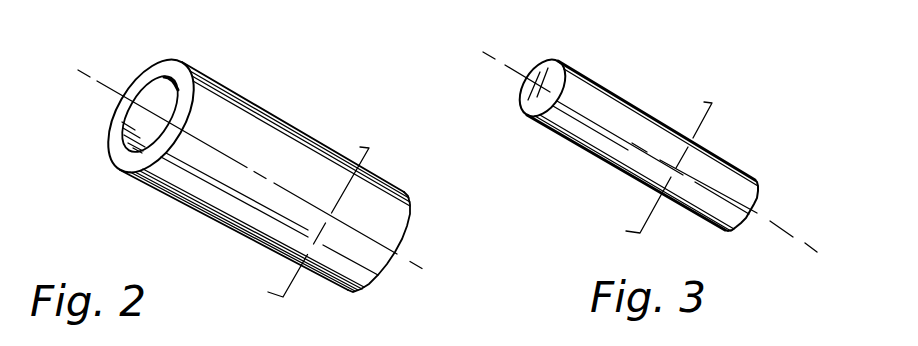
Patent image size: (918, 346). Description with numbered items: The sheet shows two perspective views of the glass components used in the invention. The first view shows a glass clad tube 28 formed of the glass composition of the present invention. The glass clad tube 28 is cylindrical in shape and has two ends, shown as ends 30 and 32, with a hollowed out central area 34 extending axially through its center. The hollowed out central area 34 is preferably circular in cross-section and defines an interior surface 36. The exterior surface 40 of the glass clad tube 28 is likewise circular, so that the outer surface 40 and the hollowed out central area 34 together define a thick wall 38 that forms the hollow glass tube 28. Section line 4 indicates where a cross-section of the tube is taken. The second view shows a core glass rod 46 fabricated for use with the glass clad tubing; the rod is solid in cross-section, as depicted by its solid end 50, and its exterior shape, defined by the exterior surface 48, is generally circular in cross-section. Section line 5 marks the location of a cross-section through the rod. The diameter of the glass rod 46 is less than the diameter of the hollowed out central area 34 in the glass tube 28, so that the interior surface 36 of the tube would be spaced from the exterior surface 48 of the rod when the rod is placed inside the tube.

In FIG. 2, the glass clad tube 28 is at (397, 177).
In FIG. 2, the end 30 is at (407, 212).
In FIG. 2, the end 32 is at (133, 82).
In FIG. 2, the hollowed out central area 34 is at (153, 97).
In FIG. 2, the interior surface 36 is at (175, 125).
In FIG. 2, the thick wall 38 is at (123, 157).
In FIG. 2, the exterior surface 40 is at (248, 100).
In FIG. 2, the section line 4- 4 is at (293, 200).
In FIG. 3, the core glass rod 46 is at (755, 172).
In FIG. 3, the exterior surface 48 is at (587, 78).
In FIG. 3, the solid end 50 is at (521, 86).
In FIG. 3, the section line 5- 5 is at (647, 154).